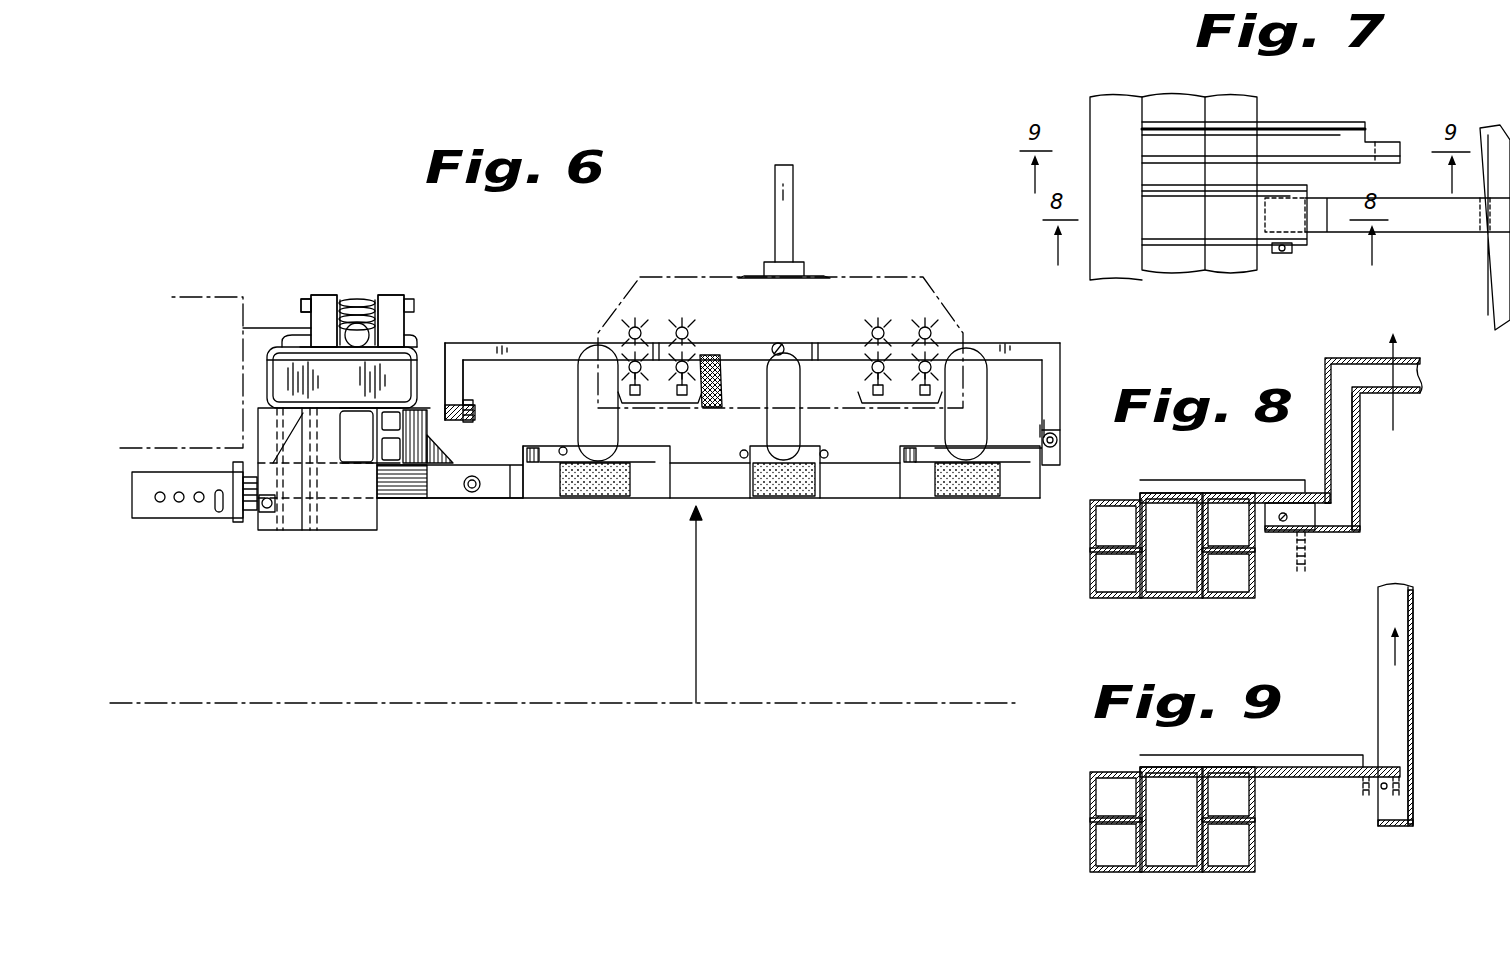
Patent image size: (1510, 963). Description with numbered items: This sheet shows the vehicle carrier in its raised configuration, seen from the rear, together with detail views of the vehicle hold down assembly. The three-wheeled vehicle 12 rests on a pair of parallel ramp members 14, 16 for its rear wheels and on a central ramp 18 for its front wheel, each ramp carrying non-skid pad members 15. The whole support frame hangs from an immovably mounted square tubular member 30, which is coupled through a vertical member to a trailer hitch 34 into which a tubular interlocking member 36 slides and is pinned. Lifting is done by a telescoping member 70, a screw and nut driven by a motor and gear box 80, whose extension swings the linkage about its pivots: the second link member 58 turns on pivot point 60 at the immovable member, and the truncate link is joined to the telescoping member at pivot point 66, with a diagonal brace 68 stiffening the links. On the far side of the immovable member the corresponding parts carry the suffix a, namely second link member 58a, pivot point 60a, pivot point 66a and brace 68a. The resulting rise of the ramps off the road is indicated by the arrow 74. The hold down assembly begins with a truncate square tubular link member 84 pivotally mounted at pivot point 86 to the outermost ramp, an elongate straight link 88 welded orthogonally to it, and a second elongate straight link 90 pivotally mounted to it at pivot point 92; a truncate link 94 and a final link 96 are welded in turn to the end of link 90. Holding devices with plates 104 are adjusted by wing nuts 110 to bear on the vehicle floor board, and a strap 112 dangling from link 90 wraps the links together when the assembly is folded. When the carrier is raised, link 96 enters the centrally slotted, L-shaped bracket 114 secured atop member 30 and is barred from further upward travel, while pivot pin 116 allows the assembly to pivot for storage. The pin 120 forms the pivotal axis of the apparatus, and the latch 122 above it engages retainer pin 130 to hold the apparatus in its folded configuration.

In FIG. 6, the three-wheeled vehicle 12 is at (800, 170).
In FIG. 6, the ramp member 14 is at (648, 488).
In FIG. 6, the non-skid pad members 15 is at (610, 490).
In FIG. 6, the ramp member 16 is at (920, 487).
In FIG. 6, the central ramp 18 is at (745, 474).
In FIG. 6, the immovably mounted square tubular member 30 is at (355, 462).
In FIG. 7, the immovably mounted square tubular member 30 is at (1162, 105).
In FIG. 8, the immovably mounted square tubular member 30 is at (1178, 598).
In FIG. 9, the immovably mounted square tubular member 30 is at (1160, 872).
In FIG. 6, the trailer hitch 34 is at (175, 520).
In FIG. 6, the tubular interlocking member 36 is at (252, 514).
In FIG. 6, the second link member 58 is at (392, 296).
In FIG. 7, the second link member 58 is at (1248, 108).
In FIG. 8, the second link member 58 is at (1258, 540).
In FIG. 9, the second link member 58 is at (1258, 798).
In FIG. 6, the second link member 58a is at (324, 297).
In FIG. 7, the second link member 58a is at (1097, 125).
In FIG. 8, the second link member 58a is at (1090, 530).
In FIG. 9, the second link member 58a is at (1090, 800).
In FIG. 6, the pivot point 60 is at (390, 456).
In FIG. 8, the pivot point 60 is at (1255, 592).
In FIG. 9, the pivot point 60 is at (1258, 845).
In FIG. 8, the pivot point 60a is at (1090, 583).
In FIG. 9, the pivot point 60a is at (1090, 853).
In FIG. 6, the pivot point 66 is at (412, 302).
In FIG. 6, the pivot point 66a is at (304, 300).
In FIG. 6, the brace 68 is at (408, 336).
In FIG. 6, the brace 68a is at (243, 328).
In FIG. 6, the telescoping member 70 is at (358, 290).
In FIG. 6, the arrow 74 is at (698, 630).
In FIG. 6, the motor and gear box 80 is at (394, 377).
In FIG. 6, the truncate square tubular link member 84 is at (1052, 370).
In FIG. 6, the pivot point 86 is at (1046, 436).
In FIG. 6, the elongate straight link 88 is at (996, 336).
In FIG. 6, the elongate straight link 90 is at (545, 343).
In FIG. 7, the elongate straight link 90 is at (1415, 220).
In FIG. 8, the elongate straight link 90 is at (1328, 358).
In FIG. 6, the pivot point 92 is at (783, 344).
In FIG. 6, the truncate link 94 is at (463, 378).
In FIG. 8, the truncate link 94 is at (1362, 465).
In FIG. 6, the final link 96 is at (445, 405).
In FIG. 8, the final link 96 is at (1345, 533).
In FIG. 6, the plate 104 is at (655, 402).
In FIG. 6, the wing nuts 110 is at (682, 314).
In FIG. 6, the strap 112 is at (716, 372).
In FIG. 6, the bracket 114 is at (425, 498).
In FIG. 7, the bracket 114 is at (1290, 213).
In FIG. 8, the bracket 114 is at (1304, 556).
In FIG. 7, the pivot pin 116 is at (1285, 255).
In FIG. 8, the pivot pin 116 is at (1272, 505).
In FIG. 6, the pin 120 is at (470, 494).
In FIG. 6, the latch 122 is at (474, 412).
In FIG. 7, the latch 122 is at (1385, 140).
In FIG. 9, the latch 122 is at (1400, 790).
In FIG. 6, the retainer pin 130 is at (567, 470).